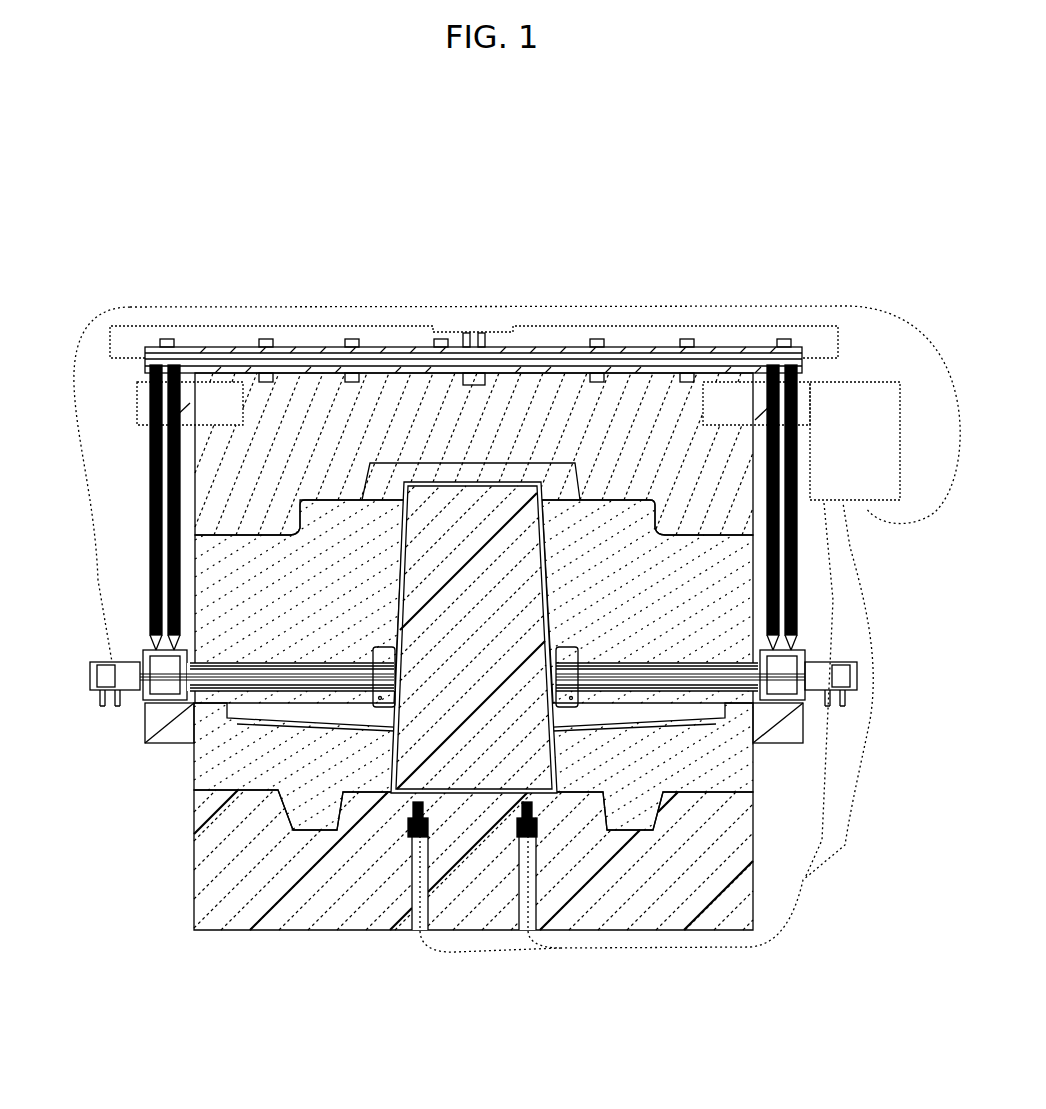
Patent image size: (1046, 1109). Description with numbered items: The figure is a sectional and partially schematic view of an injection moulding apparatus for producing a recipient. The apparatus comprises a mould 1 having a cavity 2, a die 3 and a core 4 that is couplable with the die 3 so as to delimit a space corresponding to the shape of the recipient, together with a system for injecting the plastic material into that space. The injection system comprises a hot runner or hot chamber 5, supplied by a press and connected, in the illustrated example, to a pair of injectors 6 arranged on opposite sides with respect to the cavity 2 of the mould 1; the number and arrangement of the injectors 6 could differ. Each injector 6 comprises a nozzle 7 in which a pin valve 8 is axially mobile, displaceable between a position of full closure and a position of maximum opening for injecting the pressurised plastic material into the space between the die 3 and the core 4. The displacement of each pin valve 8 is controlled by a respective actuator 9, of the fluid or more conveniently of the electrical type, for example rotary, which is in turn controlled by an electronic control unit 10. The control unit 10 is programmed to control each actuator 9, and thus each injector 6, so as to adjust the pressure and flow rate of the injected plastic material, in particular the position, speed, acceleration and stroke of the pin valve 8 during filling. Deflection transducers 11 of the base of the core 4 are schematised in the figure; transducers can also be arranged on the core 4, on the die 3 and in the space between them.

The mould 1 is at (276, 250).
The cavity 2 is at (557, 760).
The die 3 is at (230, 559).
The core 4 is at (467, 503).
The hot runner 5 is at (524, 347).
The injector 6 is at (320, 657).
The nozzle 7 is at (257, 665).
The pin valve 8 is at (735, 676).
The actuator 9 is at (90, 673).
The electronic control unit 10 is at (870, 396).
The deflection transducer 11 is at (521, 821).